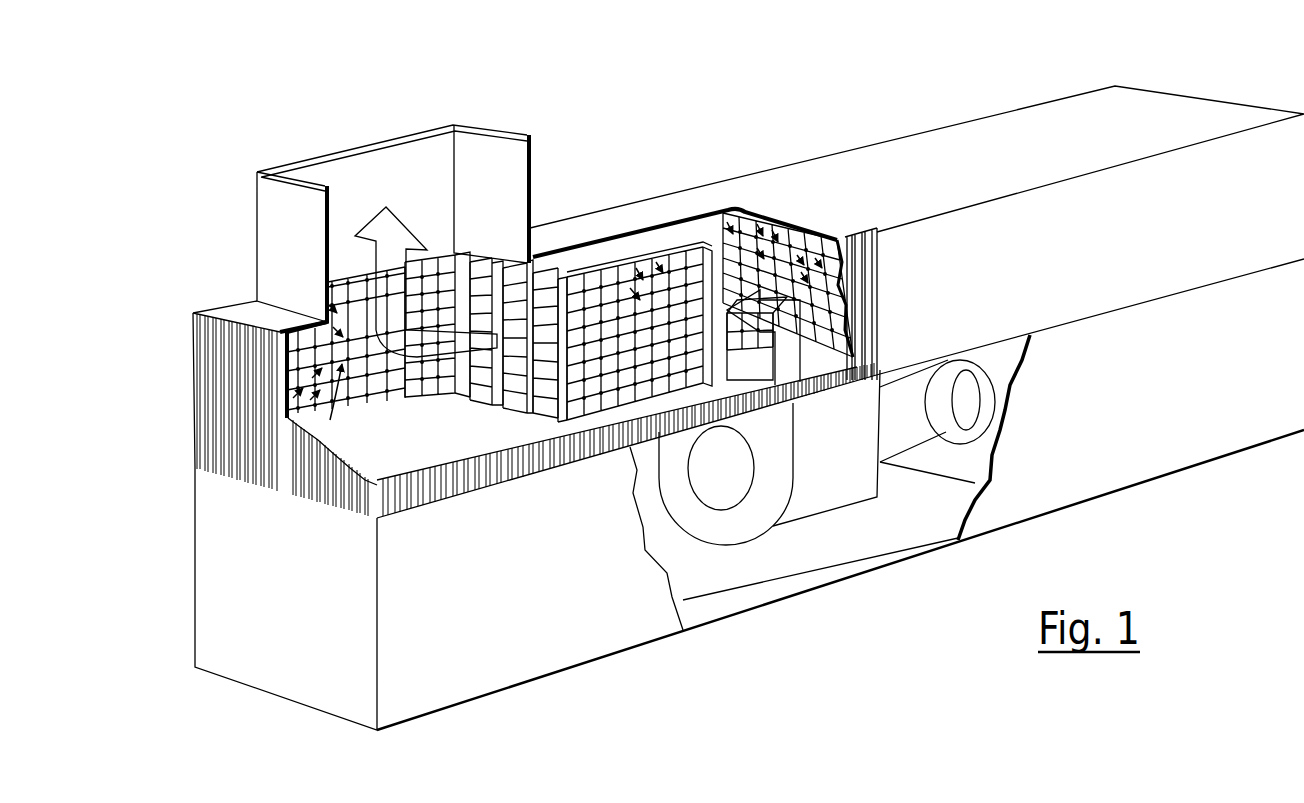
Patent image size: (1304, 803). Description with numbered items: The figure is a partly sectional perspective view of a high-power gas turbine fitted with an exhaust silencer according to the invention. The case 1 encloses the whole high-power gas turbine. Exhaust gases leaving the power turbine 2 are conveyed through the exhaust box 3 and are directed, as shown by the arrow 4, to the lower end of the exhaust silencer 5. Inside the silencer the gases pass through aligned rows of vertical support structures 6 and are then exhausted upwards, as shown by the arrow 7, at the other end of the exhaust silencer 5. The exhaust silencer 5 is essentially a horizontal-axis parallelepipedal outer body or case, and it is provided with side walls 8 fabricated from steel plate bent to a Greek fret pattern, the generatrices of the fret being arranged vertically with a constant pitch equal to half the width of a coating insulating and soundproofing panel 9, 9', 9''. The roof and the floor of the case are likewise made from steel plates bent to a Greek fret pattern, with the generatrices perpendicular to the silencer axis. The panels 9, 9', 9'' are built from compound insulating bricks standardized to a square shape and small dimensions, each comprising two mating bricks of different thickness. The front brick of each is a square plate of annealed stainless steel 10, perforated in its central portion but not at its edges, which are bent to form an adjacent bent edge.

The case 1 is at (1012, 98).
The power turbine 2 is at (943, 423).
The exhaust box 3 is at (833, 495).
The arrow 4 is at (783, 352).
The exhaust silencer 5 is at (385, 452).
The vertical support structures 6 is at (597, 273).
The arrow 7 is at (392, 224).
The side walls 8 is at (228, 387).
The coating insulating and soundproofing panel 9 is at (547, 291).
The coating insulating and soundproofing panel 9' is at (559, 350).
The coating insulating and soundproofing panel 9'' is at (624, 323).
The plate of annealed stainless steel 10 is at (597, 355).